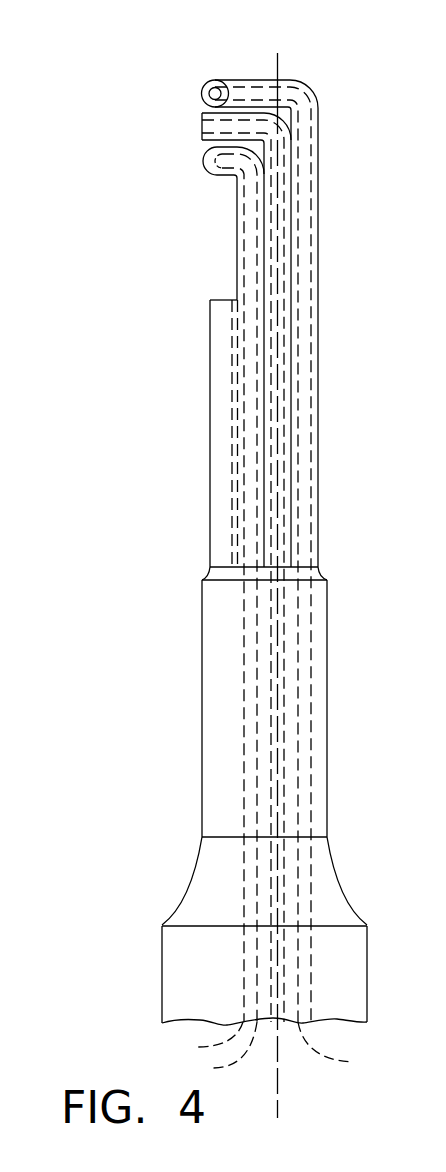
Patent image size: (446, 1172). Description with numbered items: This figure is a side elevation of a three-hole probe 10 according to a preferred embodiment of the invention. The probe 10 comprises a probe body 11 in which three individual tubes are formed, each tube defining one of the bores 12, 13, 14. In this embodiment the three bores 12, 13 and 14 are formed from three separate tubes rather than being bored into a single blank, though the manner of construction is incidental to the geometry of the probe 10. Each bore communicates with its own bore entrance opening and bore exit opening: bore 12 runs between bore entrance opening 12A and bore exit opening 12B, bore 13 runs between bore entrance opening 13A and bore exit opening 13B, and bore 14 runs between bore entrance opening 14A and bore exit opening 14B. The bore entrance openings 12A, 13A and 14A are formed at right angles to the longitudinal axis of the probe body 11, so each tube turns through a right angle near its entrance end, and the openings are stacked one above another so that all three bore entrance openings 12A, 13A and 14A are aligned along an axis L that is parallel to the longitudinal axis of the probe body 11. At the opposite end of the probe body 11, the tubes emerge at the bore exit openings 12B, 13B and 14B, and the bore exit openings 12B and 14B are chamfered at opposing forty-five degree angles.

The 3-hole probe 10 is at (145, 67).
The probe body 11 is at (318, 395).
The bore 12 is at (302, 97).
The bore entrance opening 12A is at (202, 94).
The bore exit opening 12B is at (347, 1047).
The bore 13 is at (278, 153).
The bore entrance opening 13A is at (202, 127).
The bore exit opening 13B is at (213, 1051).
The bore 14 is at (247, 210).
The bore entrance opening 14A is at (203, 159).
The bore exit opening 14B is at (197, 1039).
The axis L is at (278, 1092).